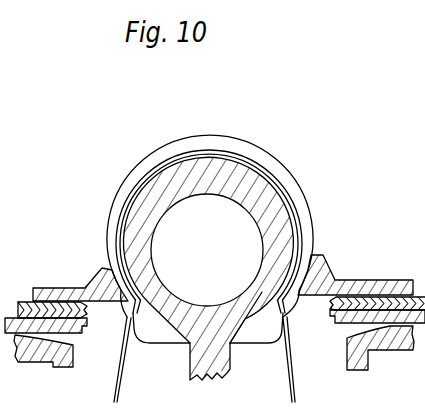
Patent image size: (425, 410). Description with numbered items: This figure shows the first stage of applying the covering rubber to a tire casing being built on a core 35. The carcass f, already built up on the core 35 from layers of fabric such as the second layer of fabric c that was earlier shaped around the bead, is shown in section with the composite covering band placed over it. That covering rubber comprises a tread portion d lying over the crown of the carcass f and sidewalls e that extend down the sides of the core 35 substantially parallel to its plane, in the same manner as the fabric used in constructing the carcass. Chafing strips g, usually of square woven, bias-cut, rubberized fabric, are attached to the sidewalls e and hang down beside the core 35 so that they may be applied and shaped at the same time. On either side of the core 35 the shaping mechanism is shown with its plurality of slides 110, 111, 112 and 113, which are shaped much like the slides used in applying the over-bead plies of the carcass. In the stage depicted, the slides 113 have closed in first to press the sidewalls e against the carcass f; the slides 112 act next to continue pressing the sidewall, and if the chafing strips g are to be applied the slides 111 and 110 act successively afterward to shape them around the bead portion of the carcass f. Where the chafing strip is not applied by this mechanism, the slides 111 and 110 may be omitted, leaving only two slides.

The core 35 is at (155, 230).
The slide 110 is at (66, 368).
The slide 111 is at (83, 322).
The slide 112 is at (72, 306).
The slide 113 is at (100, 268).
The tread portion d is at (158, 150).
The carcass f is at (268, 176).
The second layer of fabric c is at (108, 232).
The sidewalls e is at (312, 241).
The chafing strips g is at (122, 374).